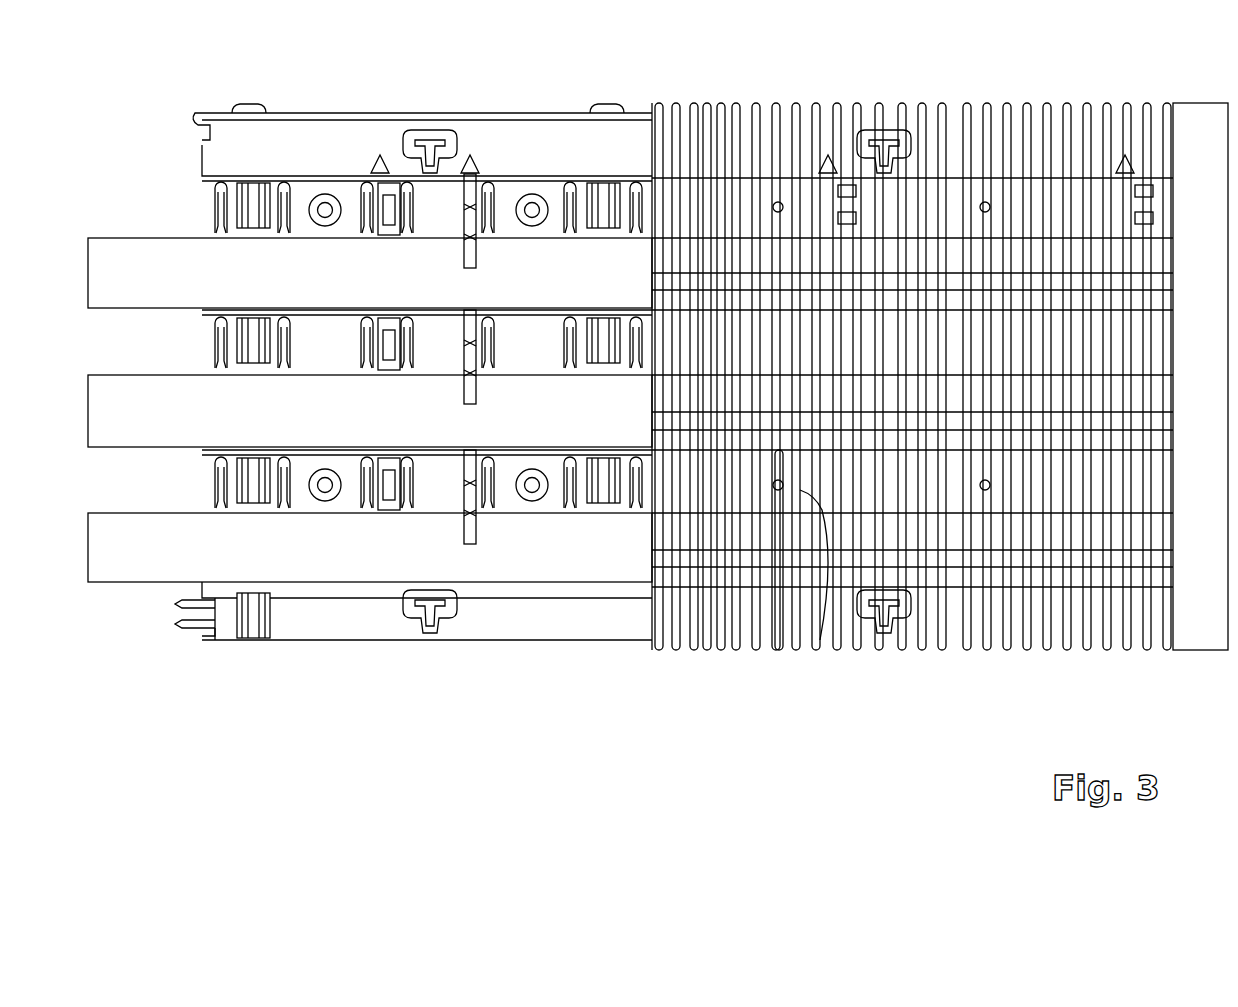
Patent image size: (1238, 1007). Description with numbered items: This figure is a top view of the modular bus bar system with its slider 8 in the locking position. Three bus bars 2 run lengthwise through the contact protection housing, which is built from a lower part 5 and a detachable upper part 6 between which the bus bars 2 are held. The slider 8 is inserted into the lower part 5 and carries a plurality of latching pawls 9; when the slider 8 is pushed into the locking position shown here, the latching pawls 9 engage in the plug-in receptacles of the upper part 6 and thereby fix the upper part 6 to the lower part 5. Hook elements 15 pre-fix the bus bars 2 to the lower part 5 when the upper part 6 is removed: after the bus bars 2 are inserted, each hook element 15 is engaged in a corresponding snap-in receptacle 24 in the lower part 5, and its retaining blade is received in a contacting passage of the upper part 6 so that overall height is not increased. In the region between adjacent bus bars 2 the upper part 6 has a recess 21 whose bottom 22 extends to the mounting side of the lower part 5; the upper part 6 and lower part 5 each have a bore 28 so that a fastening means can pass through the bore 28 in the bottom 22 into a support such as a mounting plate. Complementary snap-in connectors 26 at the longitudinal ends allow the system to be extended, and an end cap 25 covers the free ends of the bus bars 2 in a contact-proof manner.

The bus bar 2 is at (118, 290).
The lower part 5 is at (322, 118).
The upper part 6 is at (942, 108).
The slider 8 is at (265, 108).
The latching pawl 9 is at (245, 206).
The hook element 15 is at (470, 200).
The recess 21 is at (778, 200).
The bottom 22 is at (822, 648).
The snap-in receptacle 24 is at (478, 170).
The end cap 25 is at (1195, 118).
The snap-in connector 26 is at (202, 128).
The bore 28 is at (773, 485).